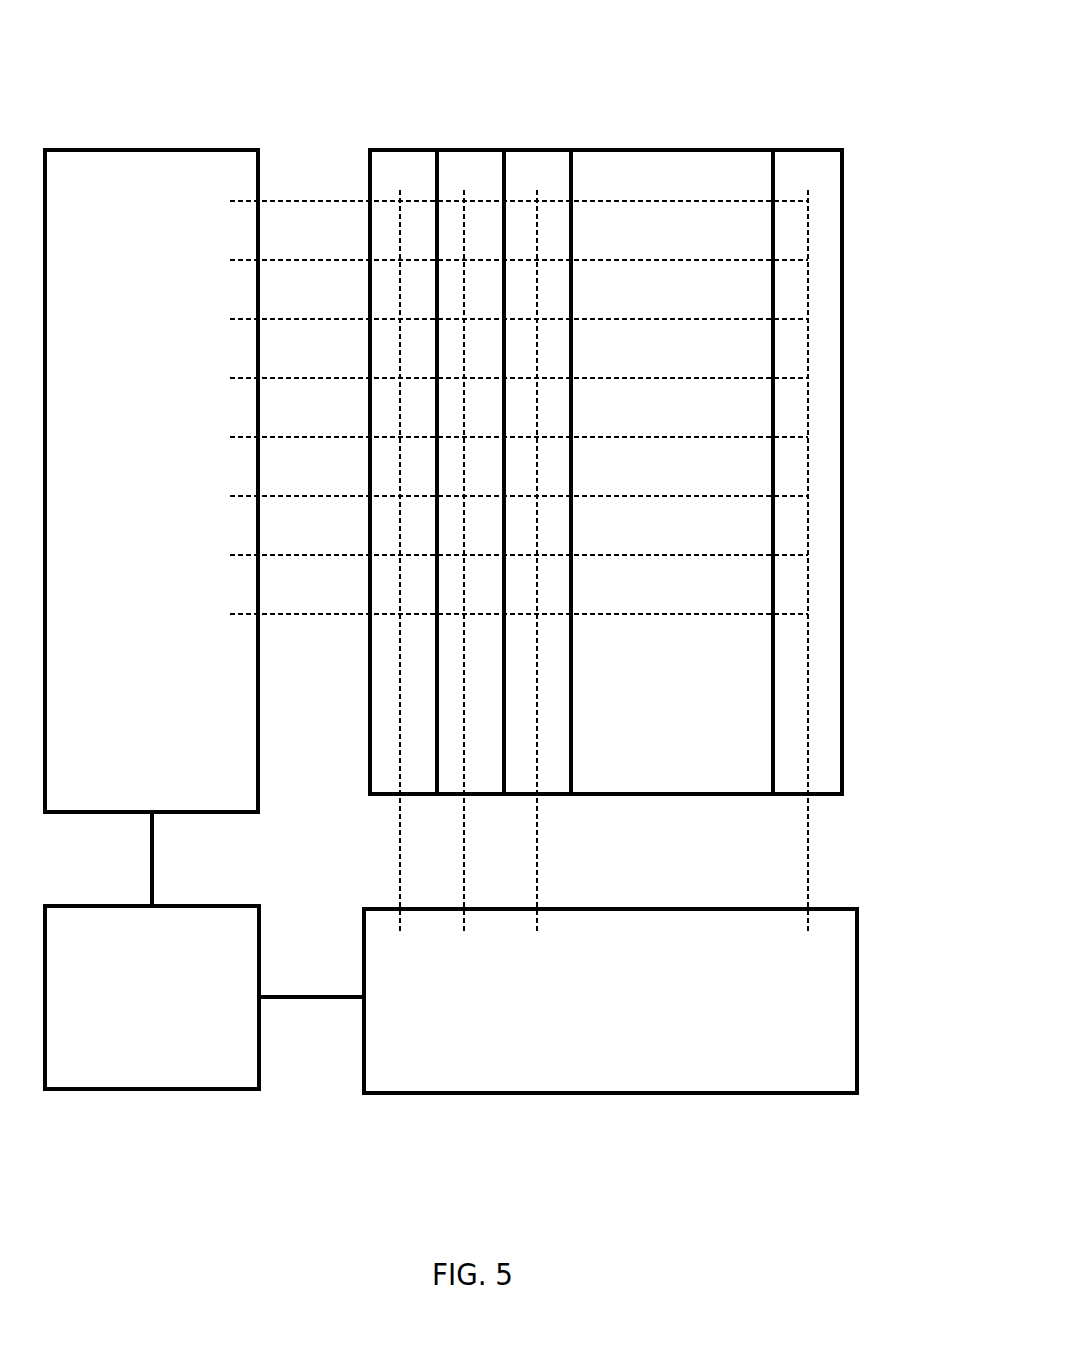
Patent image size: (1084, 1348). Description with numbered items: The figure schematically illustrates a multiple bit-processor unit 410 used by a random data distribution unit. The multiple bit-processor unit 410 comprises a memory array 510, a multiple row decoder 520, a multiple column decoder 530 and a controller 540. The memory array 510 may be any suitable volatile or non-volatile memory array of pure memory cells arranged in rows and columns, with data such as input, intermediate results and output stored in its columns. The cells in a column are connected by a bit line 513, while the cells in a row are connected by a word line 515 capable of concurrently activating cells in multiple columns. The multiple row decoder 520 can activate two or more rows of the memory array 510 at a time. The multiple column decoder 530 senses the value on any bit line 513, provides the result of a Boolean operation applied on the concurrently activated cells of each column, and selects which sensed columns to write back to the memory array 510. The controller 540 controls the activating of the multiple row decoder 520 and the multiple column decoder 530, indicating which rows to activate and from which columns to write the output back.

The multiple bit-processor unit 410 is at (855, 47).
The memory array 510 is at (843, 360).
The bit line 513 is at (400, 250).
The word line 515 is at (320, 203).
The multiple row decoder 520 is at (143, 149).
The multiple column decoder 530 is at (860, 998).
The controller 540 is at (225, 906).